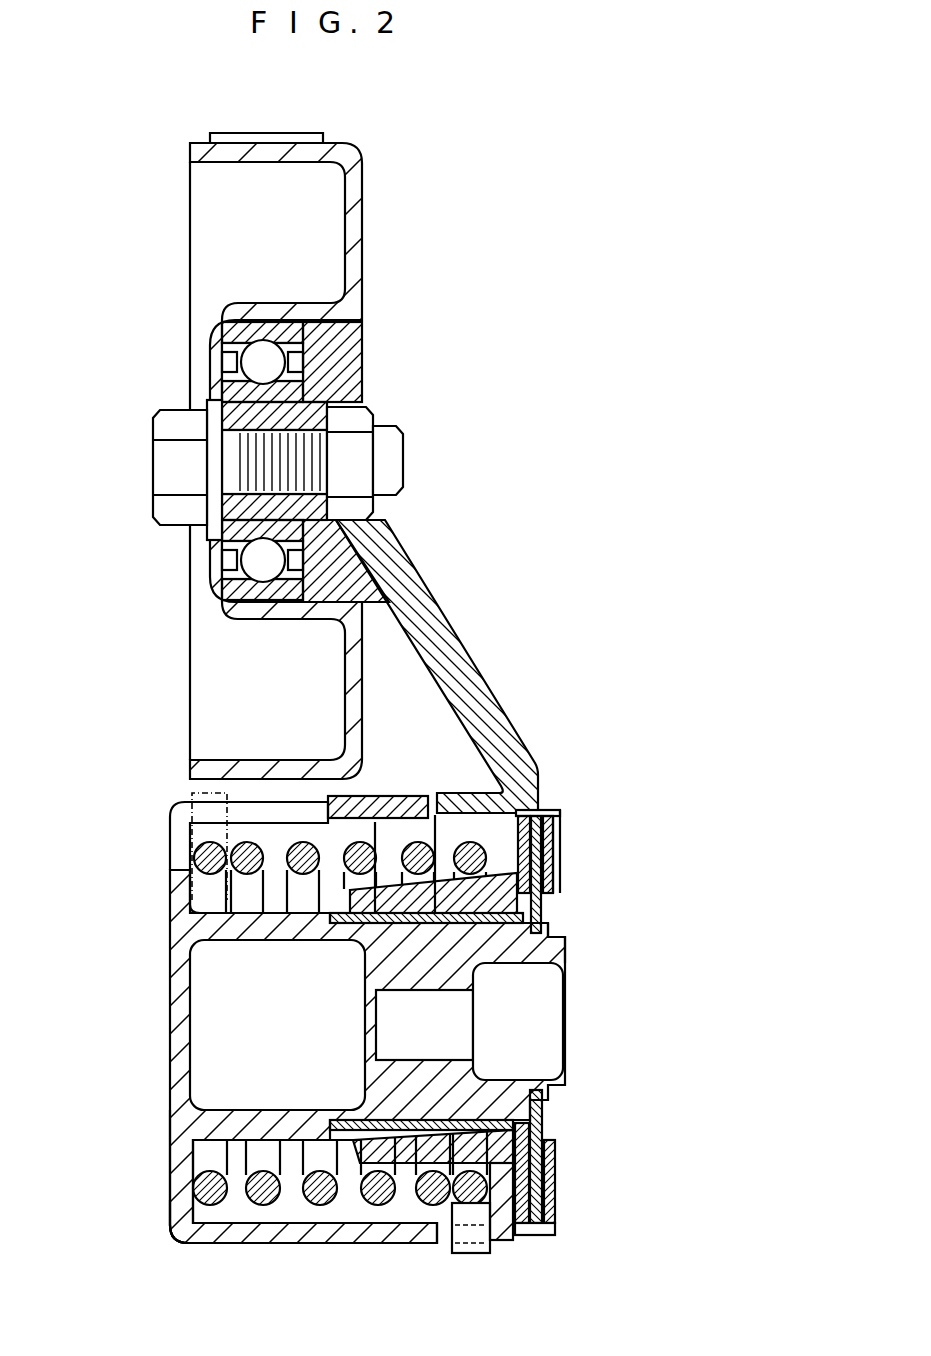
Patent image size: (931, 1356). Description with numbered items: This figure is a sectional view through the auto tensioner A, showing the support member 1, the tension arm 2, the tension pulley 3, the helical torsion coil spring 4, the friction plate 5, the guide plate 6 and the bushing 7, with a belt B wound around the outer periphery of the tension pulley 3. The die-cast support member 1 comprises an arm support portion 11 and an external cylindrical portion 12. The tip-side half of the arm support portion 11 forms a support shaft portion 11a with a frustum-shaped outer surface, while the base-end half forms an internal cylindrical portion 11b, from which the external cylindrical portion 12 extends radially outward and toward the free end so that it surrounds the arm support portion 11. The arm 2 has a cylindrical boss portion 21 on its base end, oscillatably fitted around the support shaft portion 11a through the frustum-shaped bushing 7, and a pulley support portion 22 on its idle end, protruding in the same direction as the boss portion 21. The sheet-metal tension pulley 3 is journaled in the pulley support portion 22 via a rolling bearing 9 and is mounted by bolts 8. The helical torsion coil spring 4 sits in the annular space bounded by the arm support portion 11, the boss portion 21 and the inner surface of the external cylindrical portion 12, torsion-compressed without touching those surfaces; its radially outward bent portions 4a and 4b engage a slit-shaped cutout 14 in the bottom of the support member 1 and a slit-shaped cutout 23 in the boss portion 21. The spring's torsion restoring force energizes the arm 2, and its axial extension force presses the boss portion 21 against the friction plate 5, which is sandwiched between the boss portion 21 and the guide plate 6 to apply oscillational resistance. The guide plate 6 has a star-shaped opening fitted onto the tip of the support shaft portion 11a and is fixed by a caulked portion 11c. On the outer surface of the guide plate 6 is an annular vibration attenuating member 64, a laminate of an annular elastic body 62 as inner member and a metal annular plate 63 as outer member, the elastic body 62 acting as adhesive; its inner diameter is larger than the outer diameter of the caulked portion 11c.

The support member 1 is at (172, 1236).
The tension arm 2 is at (480, 668).
The tension pulley 3 is at (364, 147).
The helical torsion coil spring 4 is at (381, 1207).
The bent portion 4a is at (192, 793).
The bent portion 4b is at (464, 1255).
The friction plate 5 is at (537, 1236).
The guide plate 6 is at (542, 823).
The bushing 7 is at (355, 906).
The bolt 8 is at (386, 470).
The rolling bearing 9 is at (215, 604).
The arm support portion 11 is at (268, 1120).
The support shaft portion 11a is at (566, 945).
The internal cylindrical portion 11b is at (255, 940).
The caulked portion 11c is at (542, 925).
The external cylindrical portion 12 is at (254, 1244).
The slit-shaped cutout 14 is at (186, 841).
The boss portion 21 is at (392, 796).
The pulley support portion 22 is at (355, 378).
The slit-shaped cutout 23 is at (489, 1232).
The annular elastic body 62 is at (556, 855).
The annular plate 63 is at (560, 886).
The vibration attenuating member 64 is at (552, 810).
The auto tensioner A is at (524, 612).
The belt B is at (318, 131).